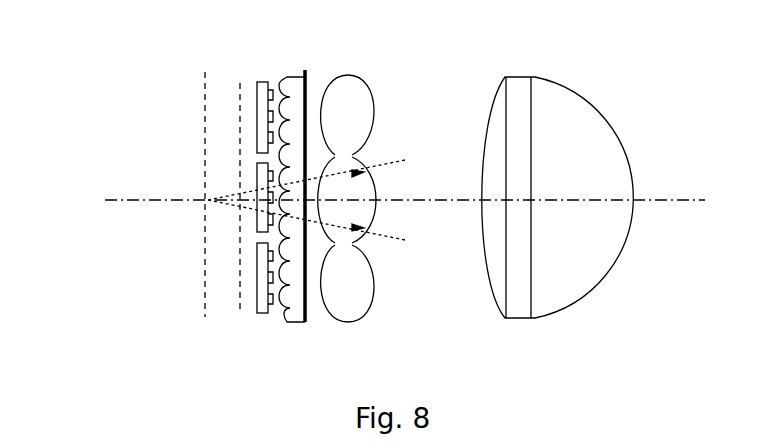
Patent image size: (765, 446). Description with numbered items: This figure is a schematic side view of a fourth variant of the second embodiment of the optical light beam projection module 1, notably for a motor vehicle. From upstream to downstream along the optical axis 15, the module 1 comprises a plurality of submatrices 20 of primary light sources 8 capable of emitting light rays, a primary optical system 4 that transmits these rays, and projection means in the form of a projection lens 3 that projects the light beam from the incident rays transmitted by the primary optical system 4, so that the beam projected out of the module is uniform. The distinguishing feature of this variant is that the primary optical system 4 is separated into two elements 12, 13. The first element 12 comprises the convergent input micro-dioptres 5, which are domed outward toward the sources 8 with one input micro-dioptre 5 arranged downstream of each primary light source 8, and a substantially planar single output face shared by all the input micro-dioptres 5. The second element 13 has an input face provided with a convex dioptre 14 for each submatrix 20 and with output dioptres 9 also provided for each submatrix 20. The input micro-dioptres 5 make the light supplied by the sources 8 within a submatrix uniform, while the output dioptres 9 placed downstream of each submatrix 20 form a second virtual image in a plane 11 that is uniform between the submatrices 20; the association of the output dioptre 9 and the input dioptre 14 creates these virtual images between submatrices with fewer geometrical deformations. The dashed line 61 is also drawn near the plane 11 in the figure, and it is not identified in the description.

The optical light beam projection module 1 is at (112, 112).
The projection lens 3 is at (598, 147).
The primary optical system 4 is at (379, 199).
The input micro-dioptres 5 is at (277, 306).
The primary light sources 8 is at (273, 115).
The output dioptres 9 is at (376, 260).
The plane 11 is at (204, 104).
The first element 12 is at (297, 92).
The second element 13 is at (353, 92).
The convex dioptre 14 is at (318, 268).
The optical axis 15 is at (688, 198).
The submatrices 20 is at (255, 113).
The reference plane 61 is at (240, 97).